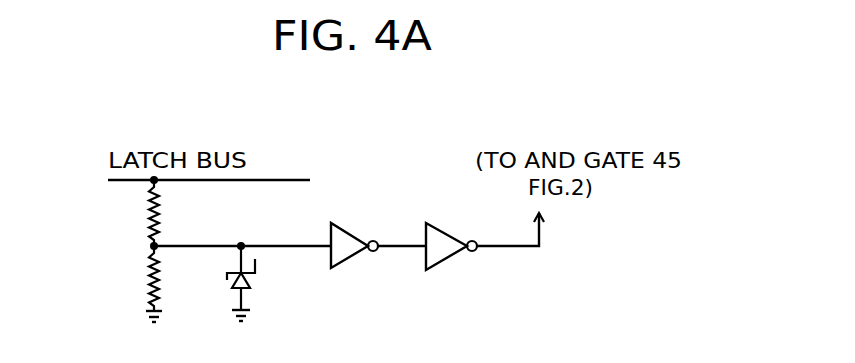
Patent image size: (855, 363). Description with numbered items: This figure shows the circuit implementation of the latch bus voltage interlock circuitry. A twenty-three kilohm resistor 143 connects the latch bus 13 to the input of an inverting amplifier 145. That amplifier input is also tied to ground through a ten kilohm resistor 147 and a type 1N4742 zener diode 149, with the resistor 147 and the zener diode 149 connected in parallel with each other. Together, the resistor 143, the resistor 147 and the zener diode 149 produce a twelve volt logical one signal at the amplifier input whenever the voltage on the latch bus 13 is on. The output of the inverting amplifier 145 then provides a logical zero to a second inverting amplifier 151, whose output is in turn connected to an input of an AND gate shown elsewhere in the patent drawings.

The latch bus 13 is at (311, 173).
The resistor 143 is at (144, 226).
The resistor 147 is at (146, 293).
The zener diode 149 is at (253, 288).
The inverting amplifier 145 is at (364, 231).
The second inverting amplifier 151 is at (460, 229).